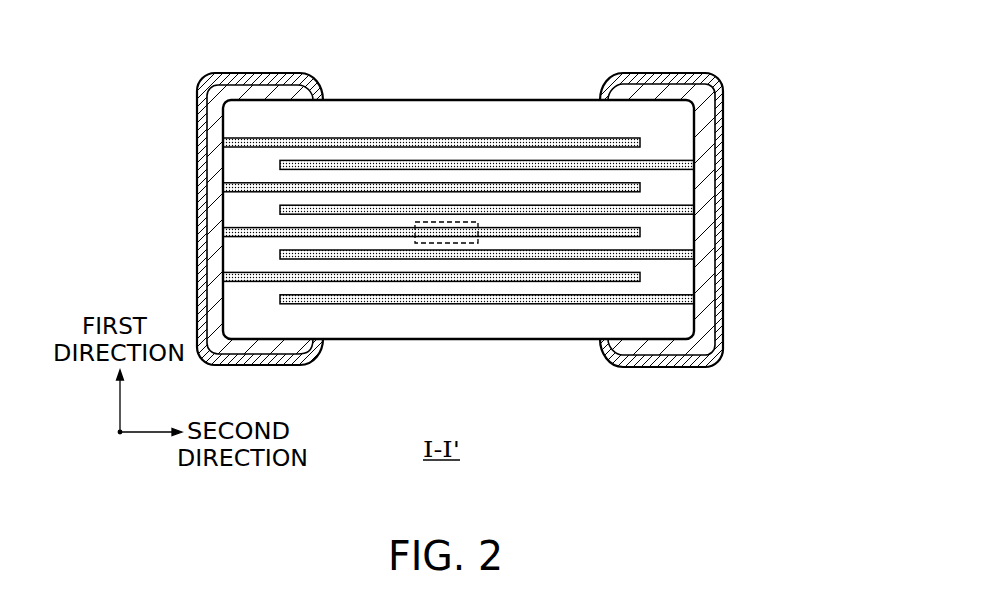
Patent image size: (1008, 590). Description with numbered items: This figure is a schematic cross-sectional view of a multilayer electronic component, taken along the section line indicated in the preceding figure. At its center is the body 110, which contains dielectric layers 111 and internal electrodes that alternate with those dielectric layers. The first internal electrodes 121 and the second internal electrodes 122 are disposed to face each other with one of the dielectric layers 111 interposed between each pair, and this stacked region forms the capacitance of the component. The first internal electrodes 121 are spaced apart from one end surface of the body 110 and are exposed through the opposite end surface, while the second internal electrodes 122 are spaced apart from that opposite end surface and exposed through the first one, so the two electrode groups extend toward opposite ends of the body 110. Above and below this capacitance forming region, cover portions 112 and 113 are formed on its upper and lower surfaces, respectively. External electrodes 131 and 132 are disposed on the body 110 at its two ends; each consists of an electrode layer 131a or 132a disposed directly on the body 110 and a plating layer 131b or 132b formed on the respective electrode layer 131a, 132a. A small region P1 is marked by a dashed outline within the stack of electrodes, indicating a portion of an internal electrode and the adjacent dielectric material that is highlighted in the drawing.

The body 110 is at (395, 100).
The dielectric layers 111 is at (343, 175).
The cover portion 112 is at (465, 115).
The cover portion 113 is at (376, 325).
The first internal electrodes 121 is at (528, 142).
The second internal electrodes 122 is at (587, 162).
The external electrode 131 is at (185, 219).
The electrode layer 131a is at (213, 152).
The plating layer 131b is at (199, 180).
The external electrode 132 is at (737, 220).
The electrode layer 132a is at (722, 123).
The plating layer 132b is at (722, 152).
The region P1 is at (458, 243).